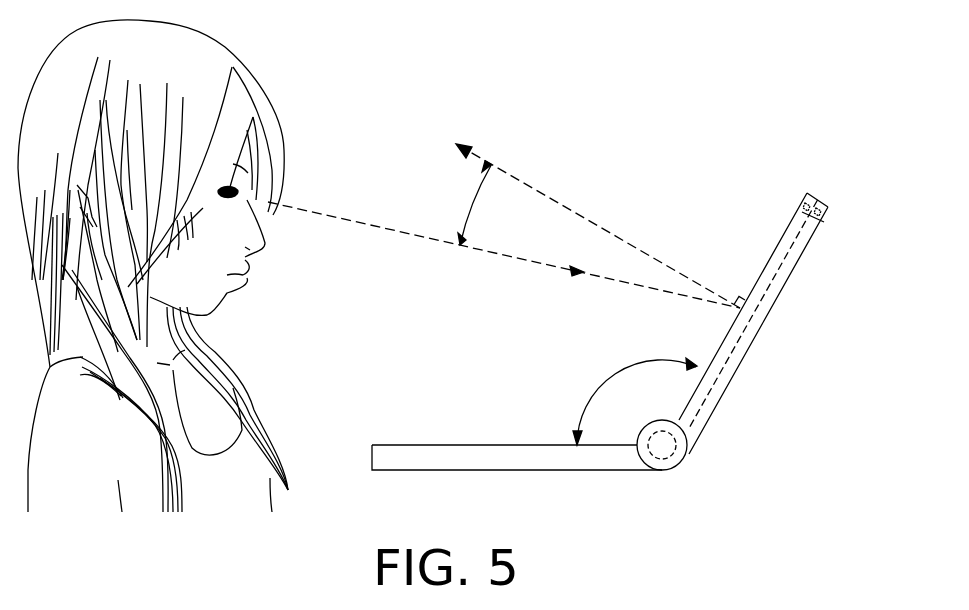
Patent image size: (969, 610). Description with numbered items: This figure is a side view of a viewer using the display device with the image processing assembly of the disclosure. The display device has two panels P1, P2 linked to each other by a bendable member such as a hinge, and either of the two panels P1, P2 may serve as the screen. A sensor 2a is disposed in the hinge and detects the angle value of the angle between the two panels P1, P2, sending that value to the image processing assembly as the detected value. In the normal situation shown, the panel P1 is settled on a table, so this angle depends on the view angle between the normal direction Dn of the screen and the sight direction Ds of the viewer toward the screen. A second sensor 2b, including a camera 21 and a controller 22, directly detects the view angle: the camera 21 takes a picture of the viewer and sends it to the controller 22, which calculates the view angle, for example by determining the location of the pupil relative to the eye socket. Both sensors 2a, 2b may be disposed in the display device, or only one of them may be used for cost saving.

The sensor 2a is at (672, 465).
The sensor 2b is at (766, 95).
The camera 21 is at (812, 192).
The controller 22 is at (828, 196).
The panel P1 is at (530, 458).
The panel P2 is at (792, 258).
The sight direction Ds is at (504, 255).
The normal direction Dn is at (598, 226).